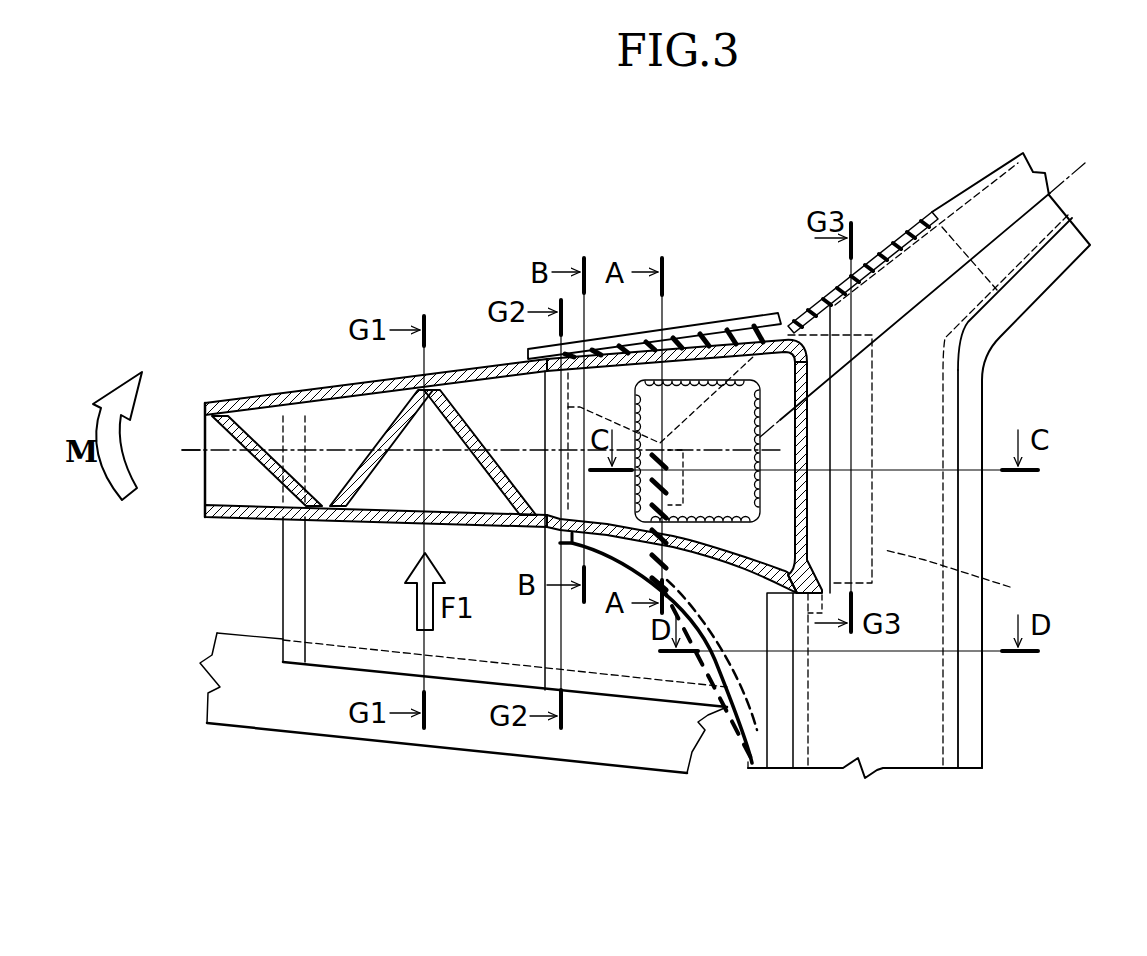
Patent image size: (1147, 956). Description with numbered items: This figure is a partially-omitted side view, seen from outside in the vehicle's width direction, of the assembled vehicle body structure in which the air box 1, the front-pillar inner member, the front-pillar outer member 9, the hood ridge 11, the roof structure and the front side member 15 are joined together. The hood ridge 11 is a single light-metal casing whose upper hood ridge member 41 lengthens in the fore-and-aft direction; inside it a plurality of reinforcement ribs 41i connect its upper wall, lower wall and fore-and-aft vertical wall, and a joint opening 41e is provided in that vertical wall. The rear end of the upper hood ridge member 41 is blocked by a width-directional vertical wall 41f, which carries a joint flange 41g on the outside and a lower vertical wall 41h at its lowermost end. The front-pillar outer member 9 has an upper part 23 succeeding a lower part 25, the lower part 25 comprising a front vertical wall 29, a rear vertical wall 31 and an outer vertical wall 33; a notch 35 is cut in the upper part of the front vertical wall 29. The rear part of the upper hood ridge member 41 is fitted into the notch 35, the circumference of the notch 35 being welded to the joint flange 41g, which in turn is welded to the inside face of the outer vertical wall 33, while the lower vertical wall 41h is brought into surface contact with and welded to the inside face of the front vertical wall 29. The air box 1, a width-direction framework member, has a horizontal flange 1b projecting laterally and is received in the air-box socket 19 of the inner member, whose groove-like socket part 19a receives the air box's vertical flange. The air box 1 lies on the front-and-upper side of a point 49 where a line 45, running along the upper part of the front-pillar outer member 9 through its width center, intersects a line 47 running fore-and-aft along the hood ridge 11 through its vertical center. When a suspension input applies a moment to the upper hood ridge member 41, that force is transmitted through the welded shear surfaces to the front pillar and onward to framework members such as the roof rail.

The air box 1 is at (692, 322).
The horizontal flange 1b is at (730, 320).
The front-pillar outer member 9 is at (986, 520).
The hood ridge 11 is at (272, 582).
The front side member 15 is at (328, 742).
The air-box socket 19 is at (643, 550).
The socket part 19a is at (603, 533).
The upper part 23 is at (1008, 202).
The lower part 25 is at (986, 711).
The front vertical wall 29 is at (793, 740).
The rear vertical wall 31 is at (948, 380).
The outer vertical wall 33 is at (912, 752).
The notch 35 is at (830, 310).
The upper hood ridge member 41 is at (513, 489).
The joint opening 41e is at (715, 340).
The width-directional vertical wall 41f is at (775, 550).
The joint flange 41g is at (1010, 587).
The lower vertical wall 41h is at (808, 607).
The reinforcement ribs 41i is at (530, 410).
The line 45 is at (1063, 173).
The line 47 is at (197, 450).
The point 49 is at (752, 380).